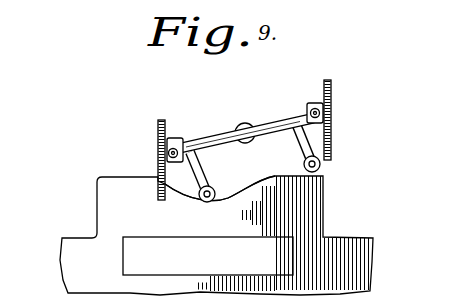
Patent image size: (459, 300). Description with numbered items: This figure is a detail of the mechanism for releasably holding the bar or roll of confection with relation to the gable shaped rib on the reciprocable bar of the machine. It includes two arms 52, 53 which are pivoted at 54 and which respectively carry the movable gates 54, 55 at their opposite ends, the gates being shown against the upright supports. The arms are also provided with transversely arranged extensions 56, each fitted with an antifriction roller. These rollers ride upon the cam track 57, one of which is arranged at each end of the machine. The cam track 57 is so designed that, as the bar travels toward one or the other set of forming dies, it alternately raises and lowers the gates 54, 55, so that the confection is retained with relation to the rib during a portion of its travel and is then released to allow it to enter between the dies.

The arm 52 is at (203, 141).
The arm 53 is at (282, 116).
The pivot / movable gate 54 is at (158, 128).
The movable gate 55 is at (331, 88).
The transversely arranged extension 56 is at (208, 168).
The cam track 57 is at (253, 184).